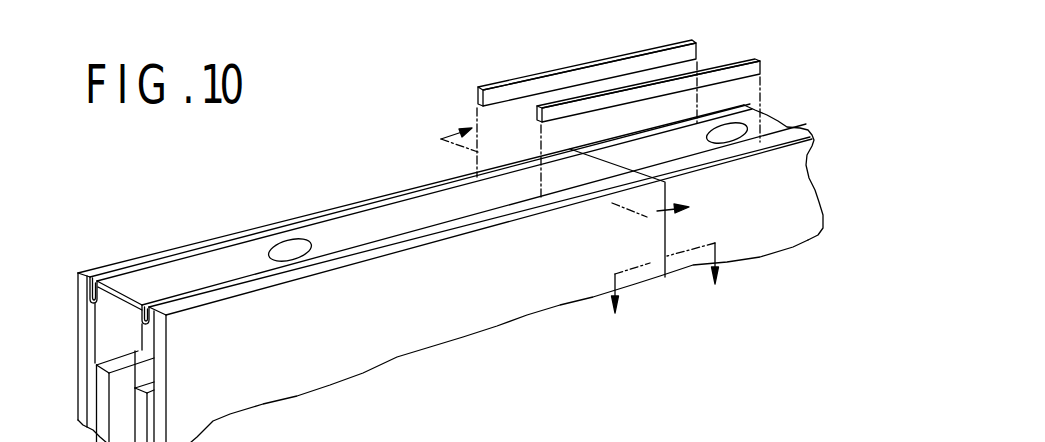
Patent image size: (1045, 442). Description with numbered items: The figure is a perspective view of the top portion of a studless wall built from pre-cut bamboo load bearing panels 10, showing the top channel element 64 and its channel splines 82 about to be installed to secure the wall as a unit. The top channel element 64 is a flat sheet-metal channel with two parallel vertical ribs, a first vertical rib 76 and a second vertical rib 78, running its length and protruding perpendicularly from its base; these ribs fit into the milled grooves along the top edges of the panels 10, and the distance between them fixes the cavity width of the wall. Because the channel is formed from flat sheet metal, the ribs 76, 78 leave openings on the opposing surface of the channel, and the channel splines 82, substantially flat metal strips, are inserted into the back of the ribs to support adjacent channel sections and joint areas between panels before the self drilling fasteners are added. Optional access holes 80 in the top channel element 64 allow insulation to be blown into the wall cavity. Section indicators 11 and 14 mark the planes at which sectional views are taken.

The panel 10 is at (72, 390).
The top channel element 64 is at (187, 275).
The first vertical rib 76 is at (93, 308).
The second vertical rib 78 is at (148, 326).
The access holes 80 is at (285, 241).
The channel splines 82 is at (547, 74).
The section line 14 is at (577, 160).
The section line 11 is at (670, 295).